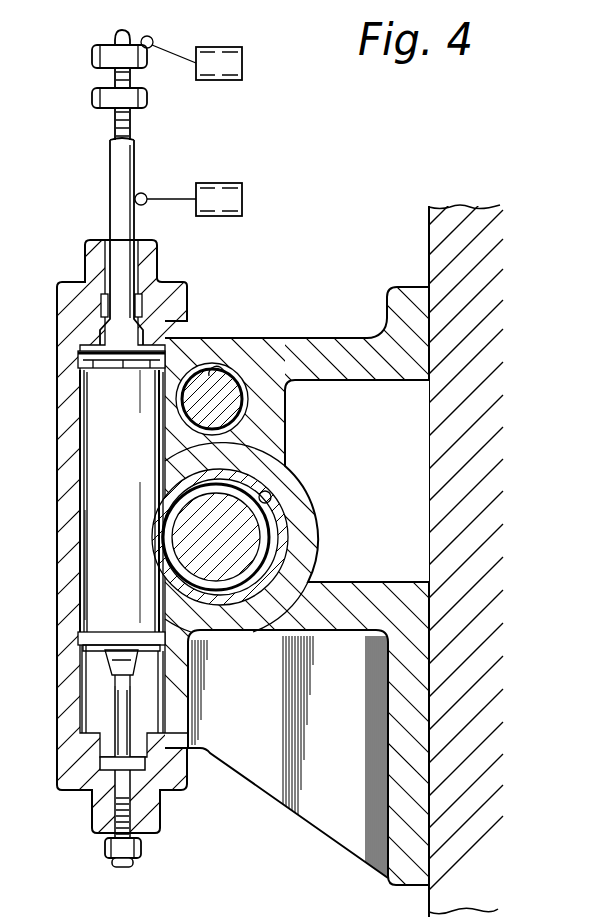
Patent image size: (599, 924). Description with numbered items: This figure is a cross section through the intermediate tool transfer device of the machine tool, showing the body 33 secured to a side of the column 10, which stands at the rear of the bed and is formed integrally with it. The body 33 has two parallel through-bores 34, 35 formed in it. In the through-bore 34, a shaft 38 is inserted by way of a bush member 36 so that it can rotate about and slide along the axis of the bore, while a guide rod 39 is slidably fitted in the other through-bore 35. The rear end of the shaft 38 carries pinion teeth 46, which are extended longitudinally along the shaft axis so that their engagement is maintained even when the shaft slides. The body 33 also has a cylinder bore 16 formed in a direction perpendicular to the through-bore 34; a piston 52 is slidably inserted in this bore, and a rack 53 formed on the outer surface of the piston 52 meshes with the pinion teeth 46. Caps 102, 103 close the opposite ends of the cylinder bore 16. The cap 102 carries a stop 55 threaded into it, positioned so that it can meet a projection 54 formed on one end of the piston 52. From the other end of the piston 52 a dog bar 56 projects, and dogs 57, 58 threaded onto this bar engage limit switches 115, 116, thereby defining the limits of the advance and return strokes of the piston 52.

The column 10 is at (430, 238).
The cylinder bore 16 is at (80, 458).
The body 33 is at (359, 352).
The through-bore 34 is at (272, 504).
The through-bore 35 is at (232, 390).
The bush member 36 is at (290, 531).
The shaft 38 is at (213, 631).
The guide rod 39 is at (258, 392).
The pinion teeth 46 is at (155, 555).
The piston 52 is at (82, 387).
The rack 53 is at (255, 463).
The projection 54 is at (97, 654).
The stop 55 is at (118, 777).
The dog bar 56 is at (112, 160).
The dog 57 is at (96, 101).
The dog 58 is at (96, 59).
The cap 102 is at (102, 815).
The cap 103 is at (93, 252).
The limit switch 115 is at (241, 63).
The limit switch 116 is at (241, 199).